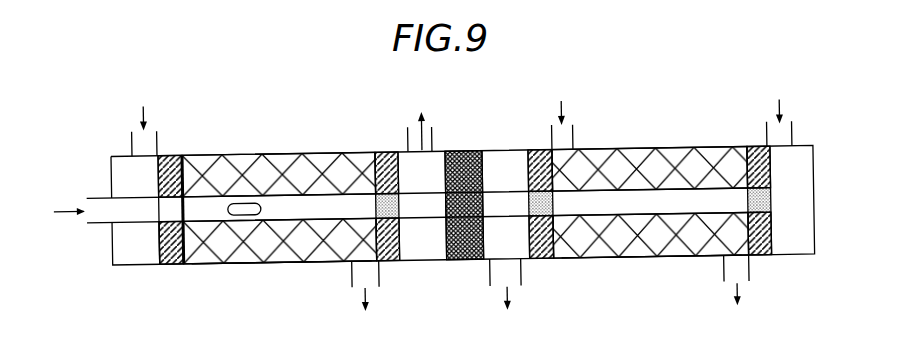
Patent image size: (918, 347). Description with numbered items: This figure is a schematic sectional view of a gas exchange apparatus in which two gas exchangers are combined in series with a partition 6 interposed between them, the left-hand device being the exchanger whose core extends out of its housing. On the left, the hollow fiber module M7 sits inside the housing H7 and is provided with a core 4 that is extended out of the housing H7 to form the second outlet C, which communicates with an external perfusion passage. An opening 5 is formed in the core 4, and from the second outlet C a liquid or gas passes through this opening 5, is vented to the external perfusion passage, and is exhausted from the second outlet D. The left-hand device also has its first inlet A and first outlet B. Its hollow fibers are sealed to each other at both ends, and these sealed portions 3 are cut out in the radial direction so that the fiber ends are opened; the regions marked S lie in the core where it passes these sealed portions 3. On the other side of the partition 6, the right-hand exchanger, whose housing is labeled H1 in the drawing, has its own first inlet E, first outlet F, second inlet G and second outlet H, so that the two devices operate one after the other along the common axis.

The sealed portions 3 is at (173, 265).
The core 4 is at (297, 203).
The opening 5 is at (233, 204).
The partition 6 is at (467, 156).
The first inlet A is at (408, 147).
The first outlet B is at (132, 148).
The second outlet C is at (105, 198).
The second outlet D is at (350, 277).
The first inlet E is at (792, 150).
The first outlet F is at (488, 279).
The second inlet G is at (574, 150).
The second outlet H is at (720, 275).
The stippled seal region S is at (556, 196).
The hollow fiber module M7 is at (151, 245).
The housing H7 is at (252, 272).
The heater H1 is at (640, 270).